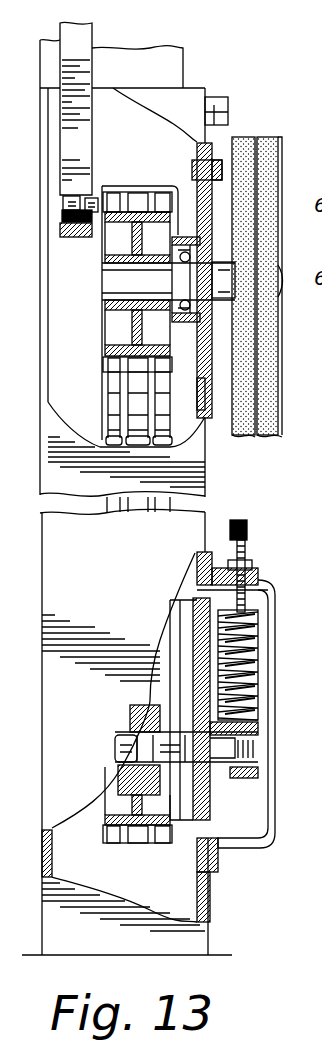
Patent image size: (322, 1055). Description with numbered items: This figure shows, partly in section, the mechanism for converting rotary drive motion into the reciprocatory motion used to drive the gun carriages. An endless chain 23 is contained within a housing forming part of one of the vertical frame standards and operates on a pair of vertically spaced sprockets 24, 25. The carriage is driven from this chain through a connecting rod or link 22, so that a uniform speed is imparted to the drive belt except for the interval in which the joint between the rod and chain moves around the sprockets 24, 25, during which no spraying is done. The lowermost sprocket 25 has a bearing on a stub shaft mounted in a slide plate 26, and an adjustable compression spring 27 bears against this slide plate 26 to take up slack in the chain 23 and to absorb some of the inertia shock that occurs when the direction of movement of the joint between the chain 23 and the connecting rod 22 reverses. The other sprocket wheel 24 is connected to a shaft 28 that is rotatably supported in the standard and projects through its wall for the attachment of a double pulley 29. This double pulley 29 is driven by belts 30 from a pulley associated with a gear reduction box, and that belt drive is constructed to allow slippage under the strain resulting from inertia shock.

The connecting rod 22 is at (82, 47).
The endless chain 23 is at (108, 408).
The sprocket 24 is at (112, 241).
The lowermost sprocket 25 is at (120, 807).
The slide plate 26 is at (205, 805).
The adjustable compression spring 27 is at (250, 656).
The shaft 28 is at (115, 288).
The double pulley 29 is at (283, 178).
The belts 30 is at (265, 137).